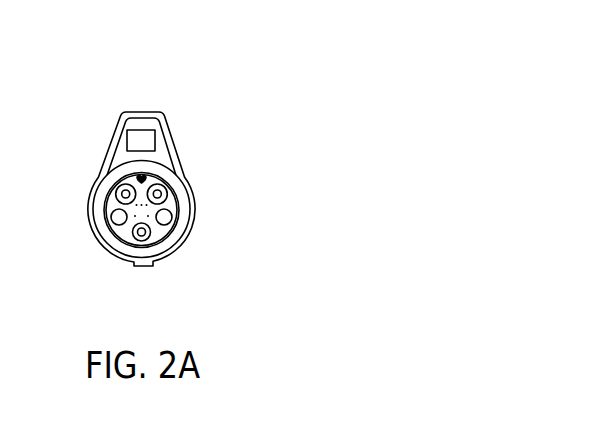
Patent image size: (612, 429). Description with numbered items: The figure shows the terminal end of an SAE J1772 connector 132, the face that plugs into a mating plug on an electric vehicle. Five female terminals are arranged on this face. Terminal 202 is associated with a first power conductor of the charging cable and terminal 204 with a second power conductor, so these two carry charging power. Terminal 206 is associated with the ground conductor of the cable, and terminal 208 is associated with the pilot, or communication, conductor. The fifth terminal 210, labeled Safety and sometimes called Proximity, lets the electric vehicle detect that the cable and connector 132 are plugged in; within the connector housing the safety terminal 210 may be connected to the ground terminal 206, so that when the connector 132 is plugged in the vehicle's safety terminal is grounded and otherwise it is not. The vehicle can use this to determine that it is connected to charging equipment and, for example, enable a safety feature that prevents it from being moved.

The connector 132 is at (237, 69).
The terminal 202 is at (118, 187).
The terminal 204 is at (165, 182).
The ground terminal 206 is at (135, 238).
The pilot (communication) terminal 208 is at (169, 224).
The safety terminal 210 is at (112, 213).